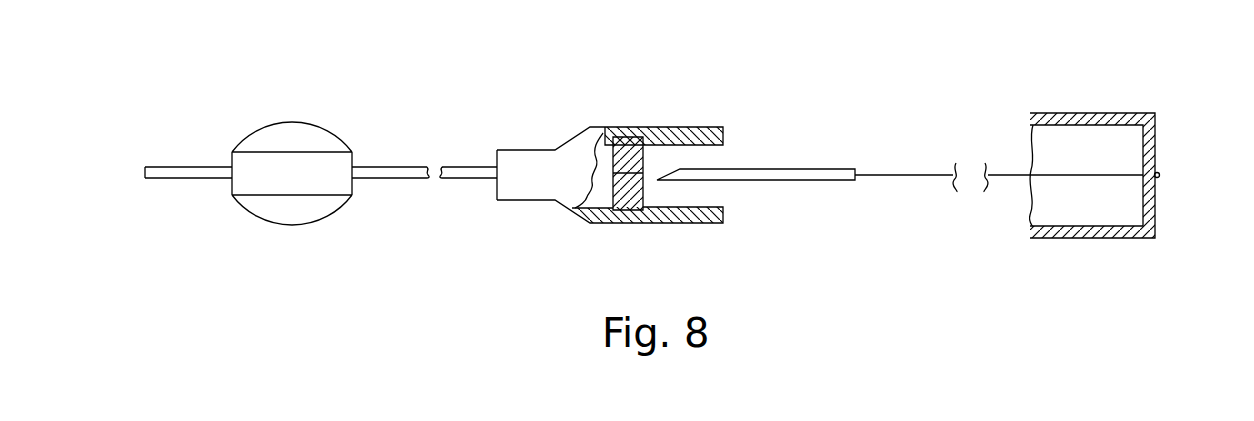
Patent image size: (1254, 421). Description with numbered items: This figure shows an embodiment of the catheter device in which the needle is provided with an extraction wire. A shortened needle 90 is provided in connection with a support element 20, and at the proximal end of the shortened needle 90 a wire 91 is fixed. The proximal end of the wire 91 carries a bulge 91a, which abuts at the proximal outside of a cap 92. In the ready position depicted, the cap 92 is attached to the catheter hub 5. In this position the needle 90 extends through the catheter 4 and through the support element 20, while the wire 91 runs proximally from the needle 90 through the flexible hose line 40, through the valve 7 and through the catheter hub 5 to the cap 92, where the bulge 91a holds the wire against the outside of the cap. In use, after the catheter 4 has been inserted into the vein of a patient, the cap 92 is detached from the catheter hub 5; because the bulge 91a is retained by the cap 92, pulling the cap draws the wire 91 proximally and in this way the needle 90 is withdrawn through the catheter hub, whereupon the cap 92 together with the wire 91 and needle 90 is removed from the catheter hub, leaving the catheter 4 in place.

The catheter 4 is at (195, 172).
The support element 20 is at (293, 206).
The flexible hose line 40 is at (472, 172).
The catheter hub 5 is at (712, 127).
The valve 7 is at (627, 138).
The shortened needle 90 is at (812, 174).
The wire 91 is at (1010, 175).
The bulge 91a is at (1159, 178).
The cap 92 is at (1067, 233).